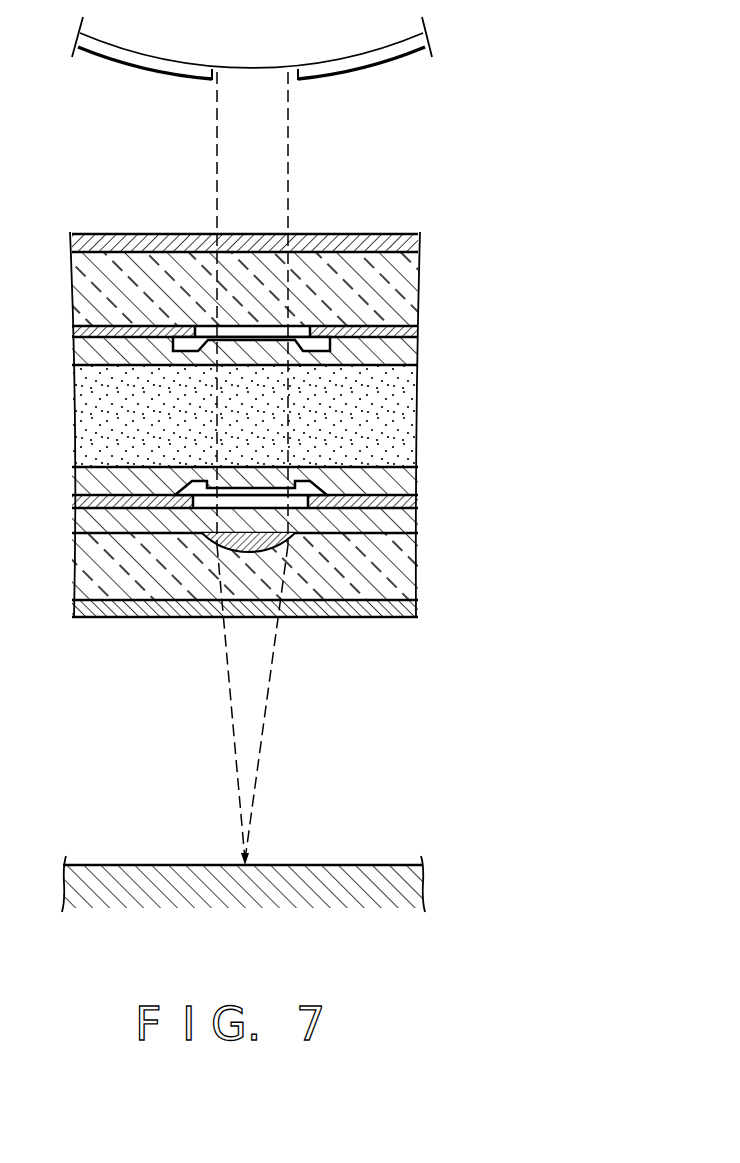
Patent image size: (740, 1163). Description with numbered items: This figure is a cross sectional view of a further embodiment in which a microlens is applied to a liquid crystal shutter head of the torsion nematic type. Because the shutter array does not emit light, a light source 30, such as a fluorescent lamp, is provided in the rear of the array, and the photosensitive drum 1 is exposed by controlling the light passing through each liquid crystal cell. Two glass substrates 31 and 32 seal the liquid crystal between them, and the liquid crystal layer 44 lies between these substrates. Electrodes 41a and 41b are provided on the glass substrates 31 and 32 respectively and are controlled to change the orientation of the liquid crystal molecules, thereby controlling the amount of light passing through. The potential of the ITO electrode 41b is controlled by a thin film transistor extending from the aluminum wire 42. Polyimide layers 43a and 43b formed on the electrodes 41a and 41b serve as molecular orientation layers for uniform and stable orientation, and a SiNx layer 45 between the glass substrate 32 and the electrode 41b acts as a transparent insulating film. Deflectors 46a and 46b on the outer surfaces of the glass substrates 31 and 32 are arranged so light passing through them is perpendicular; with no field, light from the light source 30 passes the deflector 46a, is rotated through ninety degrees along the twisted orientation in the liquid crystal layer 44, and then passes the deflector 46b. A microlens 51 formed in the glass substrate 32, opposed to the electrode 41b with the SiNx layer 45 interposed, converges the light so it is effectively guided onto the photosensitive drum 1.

The photosensitive drum 1 is at (360, 864).
The light source 30 is at (247, 77).
The glass substrate 31 is at (78, 282).
The glass substrate 32 is at (78, 578).
The electrode 41a is at (240, 326).
The electrode 41b is at (290, 468).
The aluminum wire 42 is at (78, 330).
The polyimide layer 43a is at (418, 352).
The polyimide layer 43b is at (413, 482).
The liquid crystal layer 44 is at (78, 421).
The SiNx layer 45 is at (410, 522).
The deflector 46a is at (352, 237).
The deflector 46b is at (370, 618).
The microlens 51 is at (230, 554).